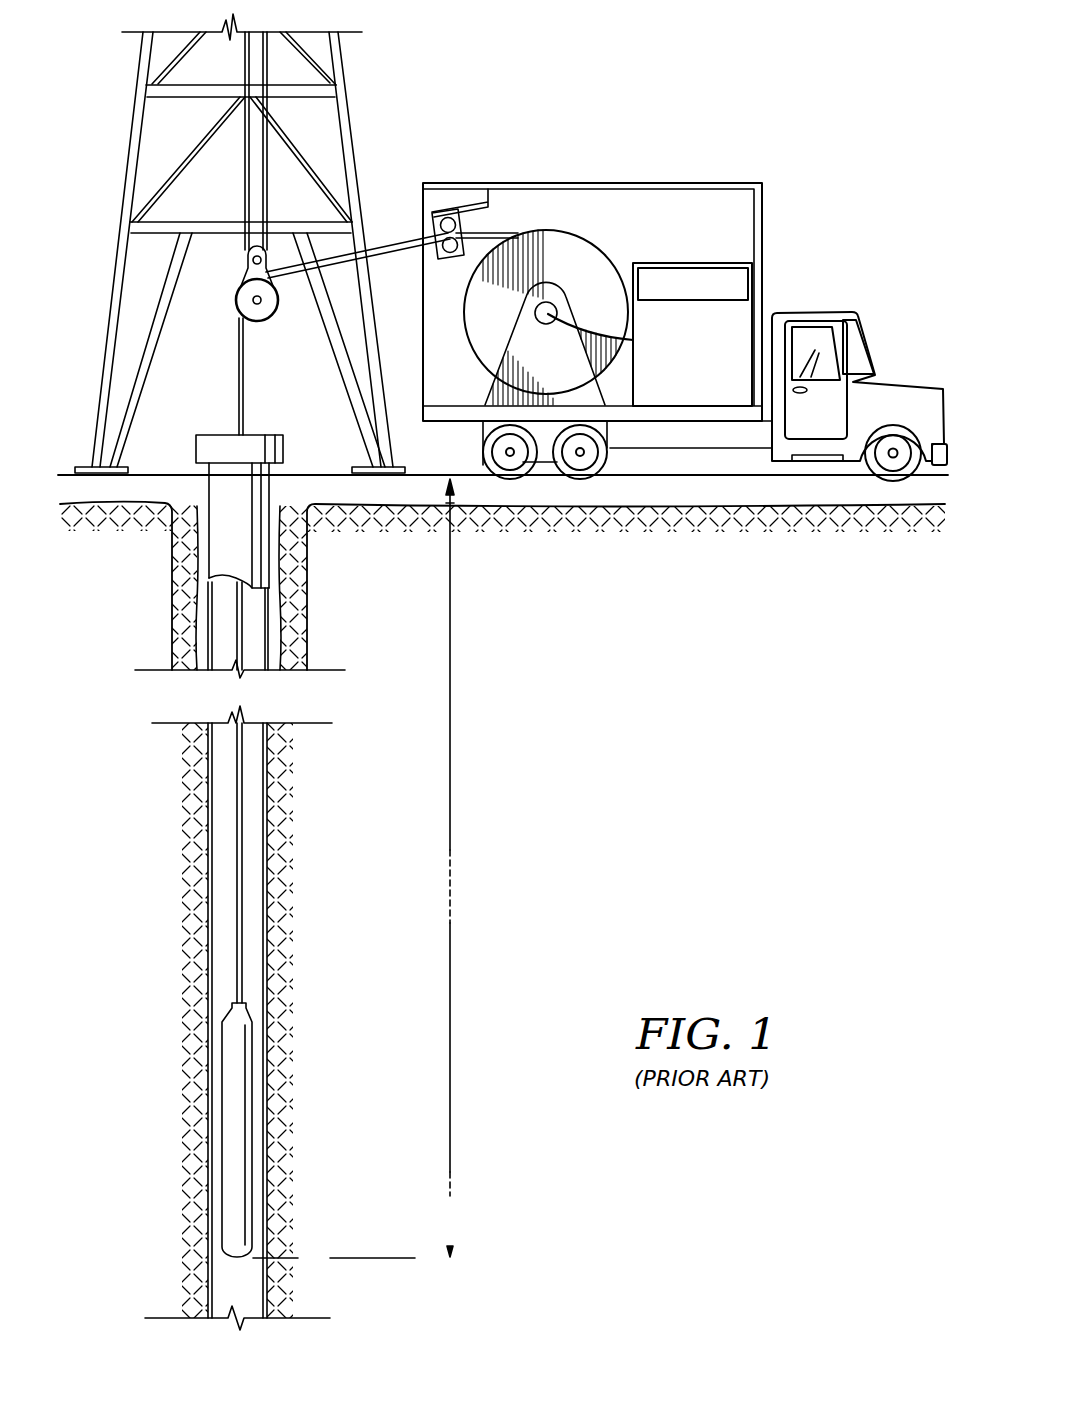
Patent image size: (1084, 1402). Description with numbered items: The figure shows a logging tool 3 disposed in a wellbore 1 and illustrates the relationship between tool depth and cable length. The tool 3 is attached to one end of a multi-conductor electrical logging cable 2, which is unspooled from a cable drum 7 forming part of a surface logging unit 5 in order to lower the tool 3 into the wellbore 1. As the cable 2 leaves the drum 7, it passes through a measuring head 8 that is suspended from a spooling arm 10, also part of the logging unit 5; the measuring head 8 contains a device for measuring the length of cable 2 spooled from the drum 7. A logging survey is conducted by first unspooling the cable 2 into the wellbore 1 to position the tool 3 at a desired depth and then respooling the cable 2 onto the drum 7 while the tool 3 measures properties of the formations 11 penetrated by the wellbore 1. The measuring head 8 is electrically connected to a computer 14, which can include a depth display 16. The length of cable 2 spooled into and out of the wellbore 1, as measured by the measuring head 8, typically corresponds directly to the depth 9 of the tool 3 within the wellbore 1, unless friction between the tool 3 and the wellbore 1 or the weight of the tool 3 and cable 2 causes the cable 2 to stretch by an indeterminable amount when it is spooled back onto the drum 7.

The wellbore 1 is at (222, 877).
The multi-conductor electrical logging cable 2 is at (237, 376).
The logging tool 3 is at (223, 1112).
The surface logging unit 5 is at (650, 183).
The cable drum 7 is at (578, 236).
The measuring head 8 is at (453, 258).
The depth 9 is at (450, 845).
The spooling arm 10 is at (493, 205).
The formations 11 is at (132, 983).
The computer 14 is at (653, 386).
The depth display 16 is at (700, 263).